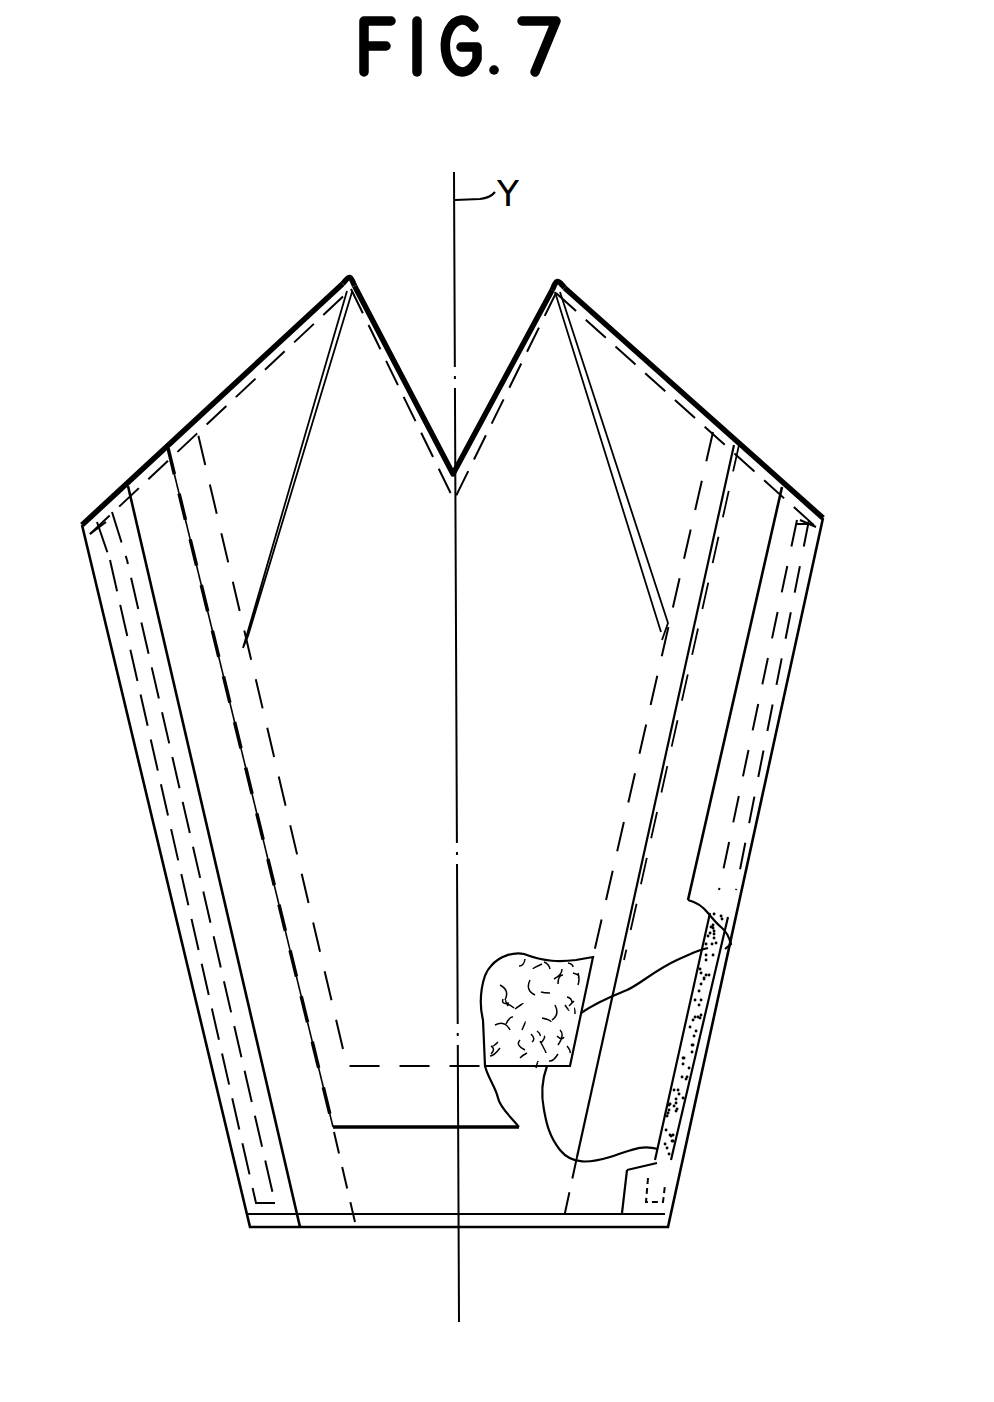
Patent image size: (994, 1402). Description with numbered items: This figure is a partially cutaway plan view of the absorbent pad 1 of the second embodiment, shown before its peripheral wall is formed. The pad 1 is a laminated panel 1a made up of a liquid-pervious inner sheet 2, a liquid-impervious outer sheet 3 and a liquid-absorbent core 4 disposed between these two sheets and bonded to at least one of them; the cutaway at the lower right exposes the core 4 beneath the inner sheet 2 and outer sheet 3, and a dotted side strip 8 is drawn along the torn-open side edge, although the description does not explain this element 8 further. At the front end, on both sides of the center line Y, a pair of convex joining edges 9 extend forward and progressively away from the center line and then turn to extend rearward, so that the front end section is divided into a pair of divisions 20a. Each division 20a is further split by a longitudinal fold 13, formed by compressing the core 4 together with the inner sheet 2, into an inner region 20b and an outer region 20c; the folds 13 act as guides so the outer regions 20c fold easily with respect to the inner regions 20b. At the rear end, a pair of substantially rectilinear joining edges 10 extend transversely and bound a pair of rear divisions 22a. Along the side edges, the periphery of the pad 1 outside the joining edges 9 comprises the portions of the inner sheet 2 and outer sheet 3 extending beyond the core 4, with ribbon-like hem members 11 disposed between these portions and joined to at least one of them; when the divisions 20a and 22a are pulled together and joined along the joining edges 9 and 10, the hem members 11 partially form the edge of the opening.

The absorbent pad 1 is at (810, 452).
The laminated panel 1a is at (470, 757).
The inner sheet 2 is at (583, 913).
The outer sheet 3 is at (567, 1135).
The liquid-absorbent core 4 is at (548, 1021).
The side adhesive strip 8 is at (195, 900).
The joining edges 9 is at (268, 356).
The joining edges 10 is at (418, 1222).
The hem members 11 is at (272, 1034).
The folds 13 is at (276, 530).
The divisions 20a is at (340, 372).
The inner regions 20b is at (396, 421).
The outer regions 20c is at (233, 417).
The divisions 22a is at (388, 1195).